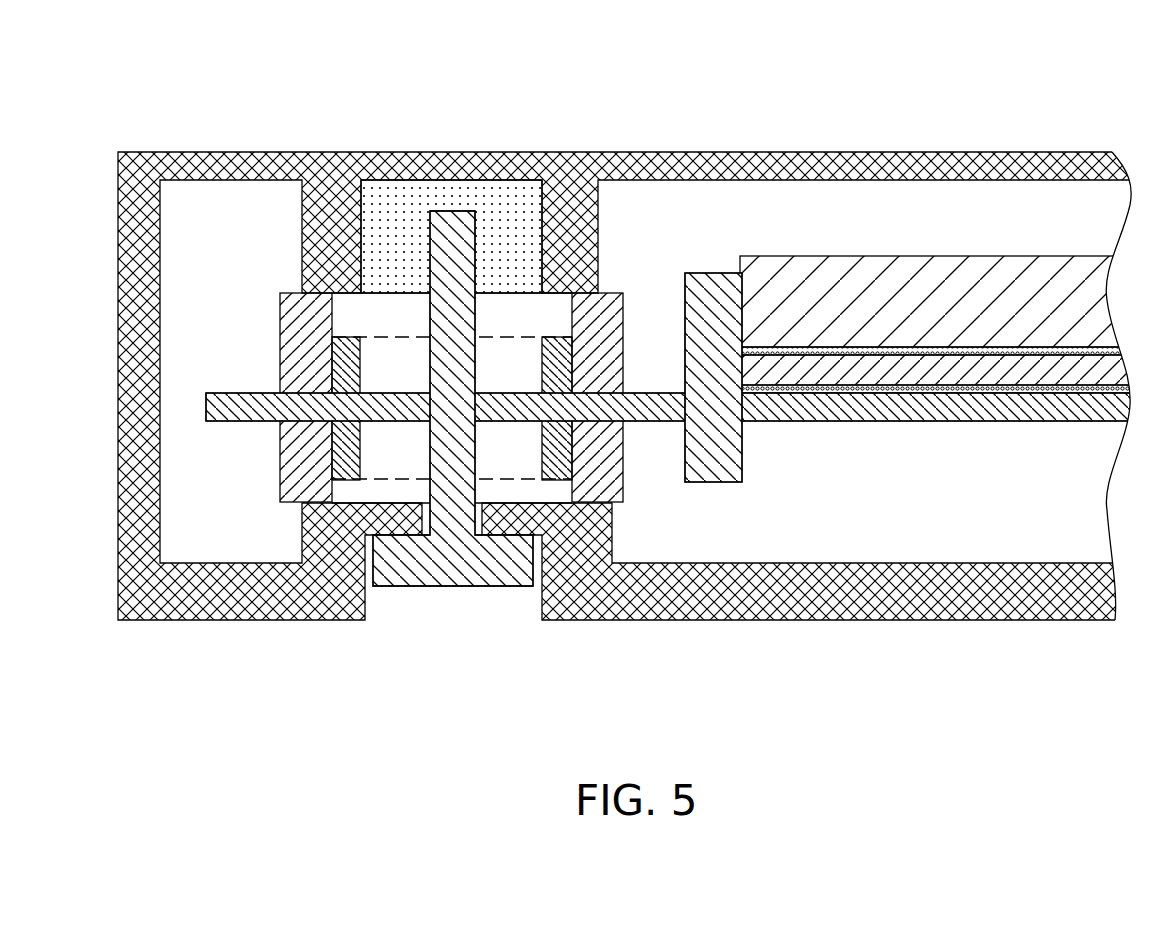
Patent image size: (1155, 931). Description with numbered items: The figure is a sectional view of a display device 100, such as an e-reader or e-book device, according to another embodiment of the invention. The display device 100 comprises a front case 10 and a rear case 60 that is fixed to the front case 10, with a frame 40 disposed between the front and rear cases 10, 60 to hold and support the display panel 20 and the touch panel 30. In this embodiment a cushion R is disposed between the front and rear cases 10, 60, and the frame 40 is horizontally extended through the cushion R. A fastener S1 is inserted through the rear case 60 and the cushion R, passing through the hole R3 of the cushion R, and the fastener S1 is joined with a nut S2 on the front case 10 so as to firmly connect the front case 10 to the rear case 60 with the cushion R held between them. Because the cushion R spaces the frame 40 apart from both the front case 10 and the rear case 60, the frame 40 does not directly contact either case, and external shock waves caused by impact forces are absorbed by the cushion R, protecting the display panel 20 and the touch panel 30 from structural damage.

The display device 100 is at (98, 57).
The front case 10 is at (676, 165).
The display panel 20 is at (943, 297).
The touch panel 30 is at (862, 368).
The frame 40 is at (242, 408).
The rear case 60 is at (672, 613).
The cushion R is at (297, 343).
The hole R3 is at (515, 308).
The fastener S1 is at (426, 568).
The nut S2 is at (390, 195).